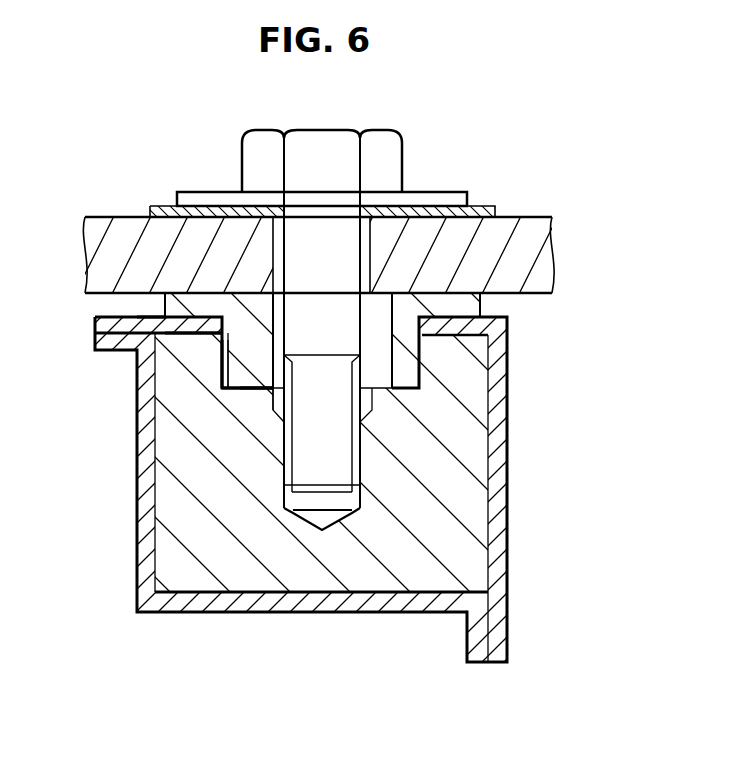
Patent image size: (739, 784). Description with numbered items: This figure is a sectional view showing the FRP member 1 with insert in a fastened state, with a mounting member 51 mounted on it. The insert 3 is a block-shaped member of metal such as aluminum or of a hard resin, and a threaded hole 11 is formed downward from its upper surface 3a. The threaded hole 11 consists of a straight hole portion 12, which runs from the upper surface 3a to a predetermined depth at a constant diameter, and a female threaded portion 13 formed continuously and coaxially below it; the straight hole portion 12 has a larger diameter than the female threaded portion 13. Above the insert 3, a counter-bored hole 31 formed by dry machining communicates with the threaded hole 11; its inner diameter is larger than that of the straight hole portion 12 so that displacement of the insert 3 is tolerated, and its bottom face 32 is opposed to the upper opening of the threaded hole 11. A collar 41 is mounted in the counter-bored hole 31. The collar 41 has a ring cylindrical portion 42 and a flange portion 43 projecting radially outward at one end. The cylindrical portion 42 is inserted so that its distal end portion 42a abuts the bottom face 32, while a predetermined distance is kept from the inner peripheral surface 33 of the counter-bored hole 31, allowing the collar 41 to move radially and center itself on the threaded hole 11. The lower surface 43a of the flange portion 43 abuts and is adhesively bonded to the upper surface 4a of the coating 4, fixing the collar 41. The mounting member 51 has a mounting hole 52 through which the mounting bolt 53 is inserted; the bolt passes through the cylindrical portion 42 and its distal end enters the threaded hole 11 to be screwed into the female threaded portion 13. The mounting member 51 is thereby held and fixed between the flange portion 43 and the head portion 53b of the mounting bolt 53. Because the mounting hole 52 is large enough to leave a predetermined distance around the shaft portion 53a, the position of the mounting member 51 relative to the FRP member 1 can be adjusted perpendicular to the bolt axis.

The FRP member with insert 1 is at (321, 389).
The insert 3 is at (382, 493).
The upper surface of insert 3a is at (455, 315).
The coating 4 is at (271, 477).
The upper surface of coating 4a is at (135, 316).
The threaded hole 11 is at (441, 445).
The straight hole portion 12 is at (375, 408).
The female threaded portion 13 is at (350, 503).
The counter-bored hole 31 is at (252, 536).
The bottom face of counter-bored hole 32 is at (257, 380).
The inner peripheral surface of counter-bored hole 33 is at (268, 390).
The collar 41 is at (148, 384).
The cylindrical portion 42 is at (255, 376).
The distal end portion 42a is at (255, 385).
The flange portion 43 is at (192, 330).
The lower surface of flange portion 43a is at (190, 325).
The mounting member 51 is at (291, 255).
The mounting hole 52 is at (277, 264).
The mounting bolt 53 is at (396, 307).
The shaft portion 53a is at (347, 257).
The head portion 53b is at (395, 162).